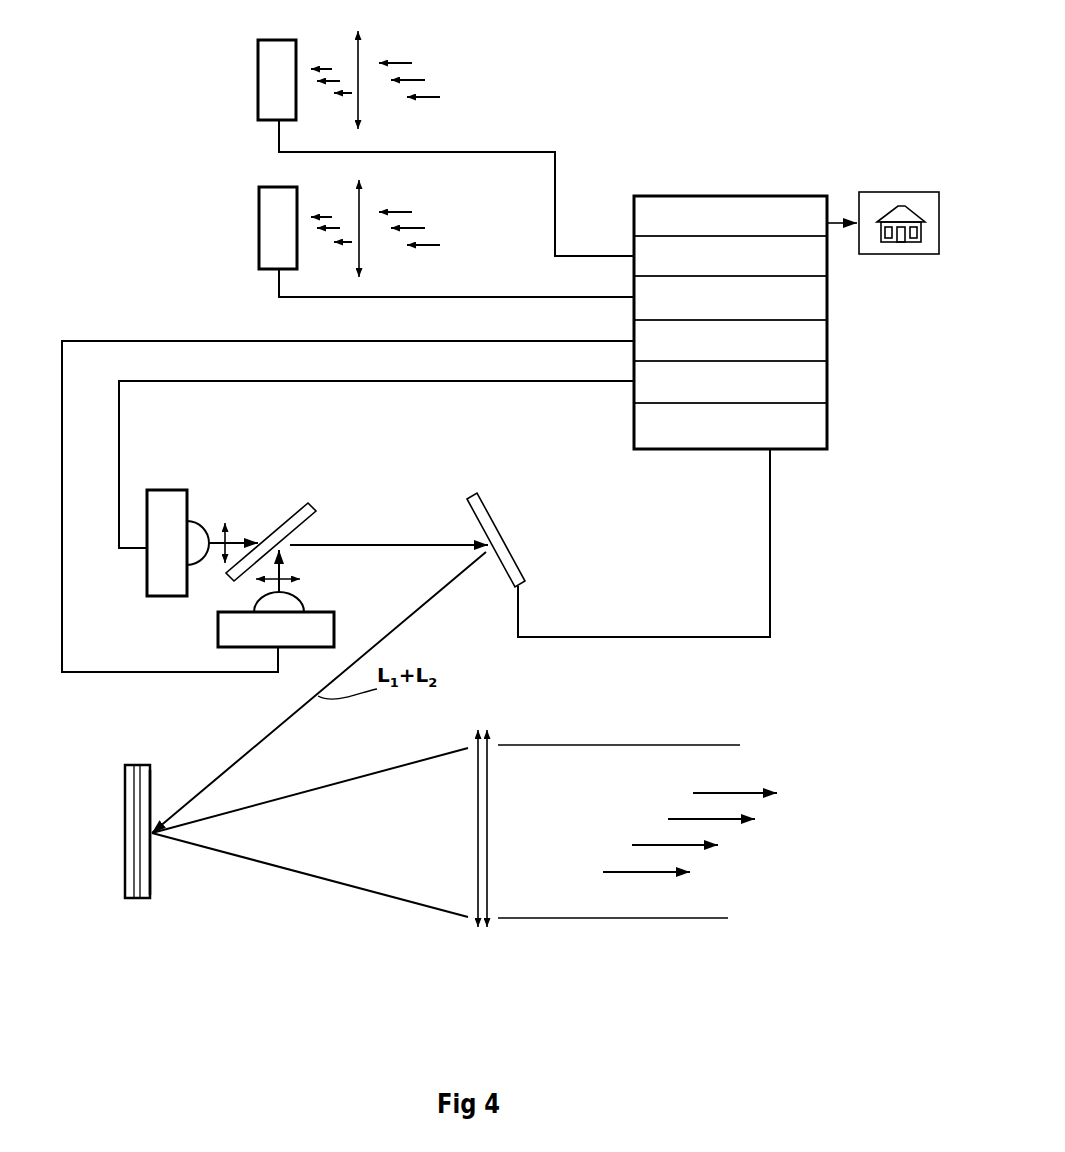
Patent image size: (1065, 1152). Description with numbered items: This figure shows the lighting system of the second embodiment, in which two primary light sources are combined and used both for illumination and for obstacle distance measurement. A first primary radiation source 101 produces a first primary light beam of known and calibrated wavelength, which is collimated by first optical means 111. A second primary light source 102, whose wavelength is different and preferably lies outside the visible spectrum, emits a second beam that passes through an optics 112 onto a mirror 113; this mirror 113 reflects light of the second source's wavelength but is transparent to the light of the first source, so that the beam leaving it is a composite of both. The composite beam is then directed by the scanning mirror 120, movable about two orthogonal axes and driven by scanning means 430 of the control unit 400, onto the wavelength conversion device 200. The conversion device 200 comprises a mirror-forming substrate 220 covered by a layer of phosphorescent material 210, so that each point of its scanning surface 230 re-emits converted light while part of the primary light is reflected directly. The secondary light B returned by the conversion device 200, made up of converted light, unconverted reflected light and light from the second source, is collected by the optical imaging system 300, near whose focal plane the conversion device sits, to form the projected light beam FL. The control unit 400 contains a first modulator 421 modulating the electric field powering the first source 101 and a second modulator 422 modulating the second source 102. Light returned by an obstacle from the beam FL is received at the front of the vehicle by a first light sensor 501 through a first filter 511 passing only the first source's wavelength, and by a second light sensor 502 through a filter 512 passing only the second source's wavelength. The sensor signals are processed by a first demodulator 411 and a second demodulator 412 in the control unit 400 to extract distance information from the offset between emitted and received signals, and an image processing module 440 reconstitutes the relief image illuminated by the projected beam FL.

The second light sensor 502 is at (258, 85).
The filter 512 is at (359, 53).
The first light sensor 501 is at (259, 233).
The first filter 511 is at (359, 200).
The control unit 400 is at (818, 196).
The image processing module 440 is at (730, 216).
The second demodulator 412 is at (730, 256).
The first demodulator 411 is at (730, 298).
The second modulator 422 is at (730, 340).
The first modulator 421 is at (730, 382).
The scanning means 430 is at (730, 426).
The mirror 120 is at (515, 557).
The mirror 113 is at (278, 503).
The first primary radiation source 101 is at (147, 558).
The first optical means 111 is at (222, 535).
The second primary light source 102 is at (218, 625).
The optics 112 is at (296, 581).
The wavelength conversion device 200 is at (123, 888).
The mirror-forming substrate 220 is at (135, 807).
The layer of phosphorescent material 210 is at (146, 792).
The scanning surface 230 is at (152, 882).
The optical imaging system 300 is at (483, 940).
The secondary light B is at (360, 897).
The projected light beam FL is at (708, 907).